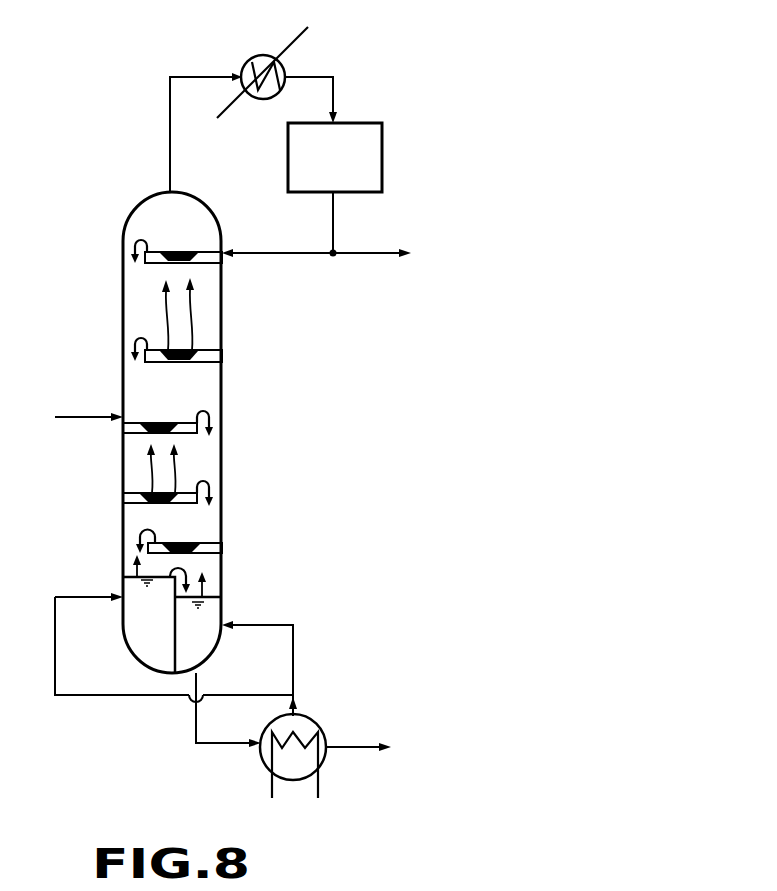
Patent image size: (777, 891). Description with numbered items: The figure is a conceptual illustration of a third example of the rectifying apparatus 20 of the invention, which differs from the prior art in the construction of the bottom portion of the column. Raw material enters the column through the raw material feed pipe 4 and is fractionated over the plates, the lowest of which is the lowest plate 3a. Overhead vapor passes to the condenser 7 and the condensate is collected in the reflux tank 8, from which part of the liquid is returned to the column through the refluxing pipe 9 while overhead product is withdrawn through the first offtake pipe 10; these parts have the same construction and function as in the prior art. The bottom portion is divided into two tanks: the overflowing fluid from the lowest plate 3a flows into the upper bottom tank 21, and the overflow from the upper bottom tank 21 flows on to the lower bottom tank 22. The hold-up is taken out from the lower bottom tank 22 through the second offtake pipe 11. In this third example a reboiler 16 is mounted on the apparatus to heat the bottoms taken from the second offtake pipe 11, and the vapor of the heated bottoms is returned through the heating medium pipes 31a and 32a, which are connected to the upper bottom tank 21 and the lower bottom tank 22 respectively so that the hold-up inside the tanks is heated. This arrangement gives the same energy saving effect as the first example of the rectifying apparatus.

The condenser 7 is at (247, 60).
The reflux tank 8 is at (382, 145).
The refluxing pipe 9 is at (265, 256).
The first offtake pipe 10 is at (368, 257).
The rectifying apparatus 20 is at (82, 268).
The raw material feed pipe 4 is at (68, 416).
The lowest plate 3a is at (203, 543).
The steam pipe 31a is at (75, 594).
The steam pipe 32a is at (283, 622).
The upper bottom tank 21 is at (142, 628).
The lower bottom tank 22 is at (200, 632).
The reboiler 16 is at (323, 727).
The second offtake pipe 11 is at (226, 745).